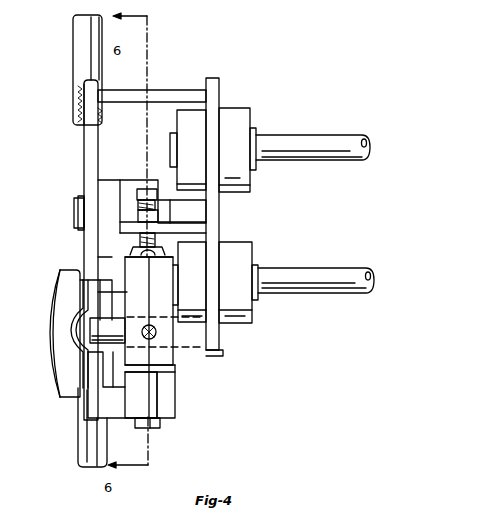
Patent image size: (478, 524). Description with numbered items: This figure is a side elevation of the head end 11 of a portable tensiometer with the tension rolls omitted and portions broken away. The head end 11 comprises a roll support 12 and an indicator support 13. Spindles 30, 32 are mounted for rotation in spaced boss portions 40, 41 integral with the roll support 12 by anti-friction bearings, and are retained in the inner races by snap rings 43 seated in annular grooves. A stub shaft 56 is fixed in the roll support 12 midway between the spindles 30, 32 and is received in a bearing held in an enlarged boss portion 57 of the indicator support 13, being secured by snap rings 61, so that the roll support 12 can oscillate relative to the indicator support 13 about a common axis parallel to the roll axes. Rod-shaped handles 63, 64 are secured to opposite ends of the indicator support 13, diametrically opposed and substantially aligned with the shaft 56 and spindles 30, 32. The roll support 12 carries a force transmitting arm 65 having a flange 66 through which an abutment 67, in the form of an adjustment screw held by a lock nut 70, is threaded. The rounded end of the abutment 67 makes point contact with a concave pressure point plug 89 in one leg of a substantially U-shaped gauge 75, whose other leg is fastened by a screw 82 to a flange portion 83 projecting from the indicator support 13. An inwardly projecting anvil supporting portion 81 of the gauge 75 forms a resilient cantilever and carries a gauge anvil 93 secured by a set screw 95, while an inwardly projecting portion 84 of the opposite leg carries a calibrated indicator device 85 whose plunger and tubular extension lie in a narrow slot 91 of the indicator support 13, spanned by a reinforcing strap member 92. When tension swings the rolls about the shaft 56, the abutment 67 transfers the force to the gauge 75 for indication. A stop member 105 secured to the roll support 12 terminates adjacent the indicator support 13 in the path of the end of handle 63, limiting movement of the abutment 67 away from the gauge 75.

The head end 11 is at (75, 108).
The roll support 12 is at (212, 78).
The indicator support 13 is at (86, 150).
The spindle 30 is at (304, 140).
The spindle 32 is at (330, 272).
The boss portion 40 is at (232, 112).
The boss portion 41 is at (242, 246).
The snap ring 43 is at (256, 134).
The stub shaft 56 is at (170, 200).
The boss portion 57 is at (104, 180).
The snap ring 61 is at (78, 198).
The handle 63 is at (78, 38).
The handle 64 is at (87, 443).
The force transmitting arm 65 is at (210, 211).
The flange 66 is at (124, 236).
The abutment 67 is at (137, 195).
The lock nut 70 is at (138, 215).
The gauge 75 is at (158, 273).
The anvil supporting portion 81 is at (162, 291).
The screw 82 is at (155, 428).
The flange portion 83 is at (122, 412).
The inwardly projecting portion 84 is at (141, 395).
The indicator device 85 is at (62, 284).
The pressure point plug 89 is at (138, 337).
The slot 91 is at (112, 300).
The strap member 92 is at (73, 322).
The gauge anvil 93 is at (118, 330).
The set screw 95 is at (157, 332).
The stop member 105 is at (158, 90).